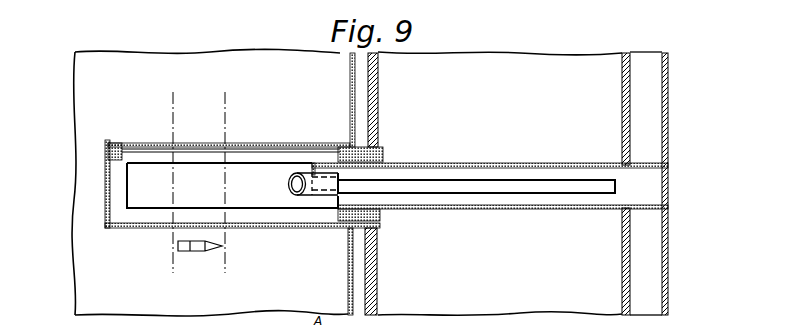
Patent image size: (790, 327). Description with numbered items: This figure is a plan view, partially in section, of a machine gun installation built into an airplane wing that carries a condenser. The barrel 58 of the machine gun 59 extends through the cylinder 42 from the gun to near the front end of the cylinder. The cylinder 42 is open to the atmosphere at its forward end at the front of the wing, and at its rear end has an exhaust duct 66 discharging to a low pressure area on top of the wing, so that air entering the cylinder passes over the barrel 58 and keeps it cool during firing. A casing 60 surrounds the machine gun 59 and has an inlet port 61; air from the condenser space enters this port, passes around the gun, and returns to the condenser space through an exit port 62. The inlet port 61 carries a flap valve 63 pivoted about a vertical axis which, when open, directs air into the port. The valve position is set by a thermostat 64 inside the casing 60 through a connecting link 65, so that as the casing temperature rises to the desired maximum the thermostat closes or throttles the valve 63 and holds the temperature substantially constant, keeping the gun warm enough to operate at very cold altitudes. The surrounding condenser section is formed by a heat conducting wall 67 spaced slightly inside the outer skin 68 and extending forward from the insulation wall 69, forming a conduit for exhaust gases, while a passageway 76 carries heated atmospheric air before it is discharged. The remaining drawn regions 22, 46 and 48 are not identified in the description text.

The housing 22 is at (500, 183).
The cylinder 42 is at (538, 165).
The wall 46 is at (348, 283).
The chamber 48 is at (210, 182).
The barrel 58 is at (464, 182).
The machine gun 59 is at (253, 210).
The casing 60 is at (248, 146).
The inlet port 61 is at (378, 140).
The exit port 62 is at (382, 218).
The flap valve 63 is at (386, 152).
The thermostat 64 is at (119, 143).
The connecting link 65 is at (181, 142).
The exhaust duct 66 is at (310, 195).
The heat conducting wall 67 is at (623, 275).
The outer skin 68 is at (667, 284).
The insulation wall 69 is at (378, 284).
The passageway 76 is at (652, 113).